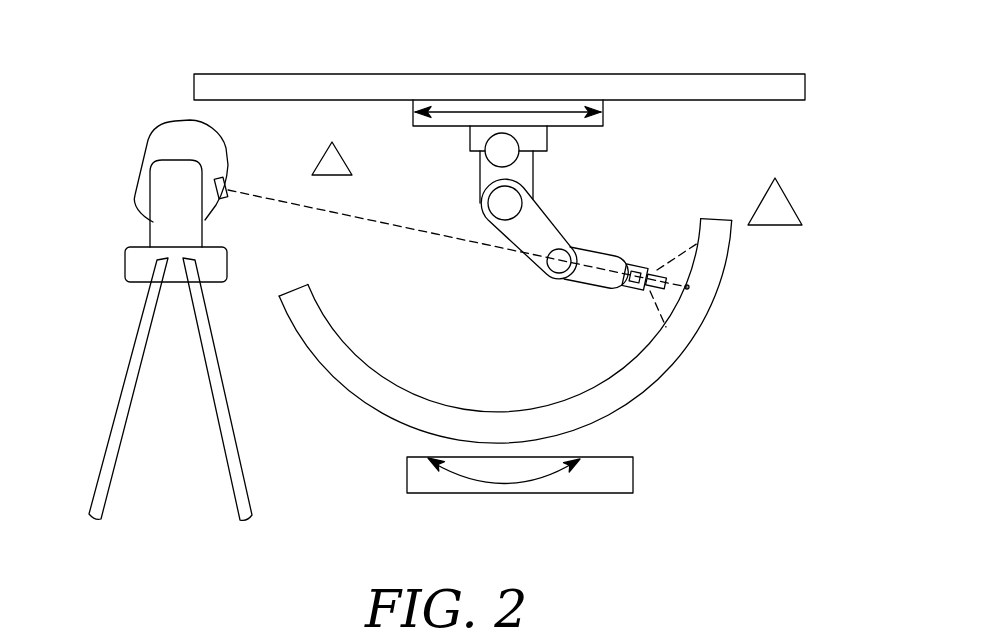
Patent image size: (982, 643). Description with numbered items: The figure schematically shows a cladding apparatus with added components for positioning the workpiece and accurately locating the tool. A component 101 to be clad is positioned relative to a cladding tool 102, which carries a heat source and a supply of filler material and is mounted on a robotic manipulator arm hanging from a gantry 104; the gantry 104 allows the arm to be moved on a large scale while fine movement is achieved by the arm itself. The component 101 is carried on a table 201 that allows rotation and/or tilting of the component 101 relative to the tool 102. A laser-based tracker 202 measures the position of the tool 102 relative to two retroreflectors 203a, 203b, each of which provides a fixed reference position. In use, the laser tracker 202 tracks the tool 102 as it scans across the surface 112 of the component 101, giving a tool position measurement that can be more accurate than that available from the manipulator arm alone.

The component to be clad 101 is at (680, 367).
The surface of the component 112 is at (697, 276).
The cladding tool 102 is at (656, 268).
The gantry 104 is at (580, 99).
The table 201 is at (633, 470).
The laser-based tracker 202 is at (153, 150).
The retroreflector 203a is at (345, 163).
The retroreflector 203b is at (783, 199).